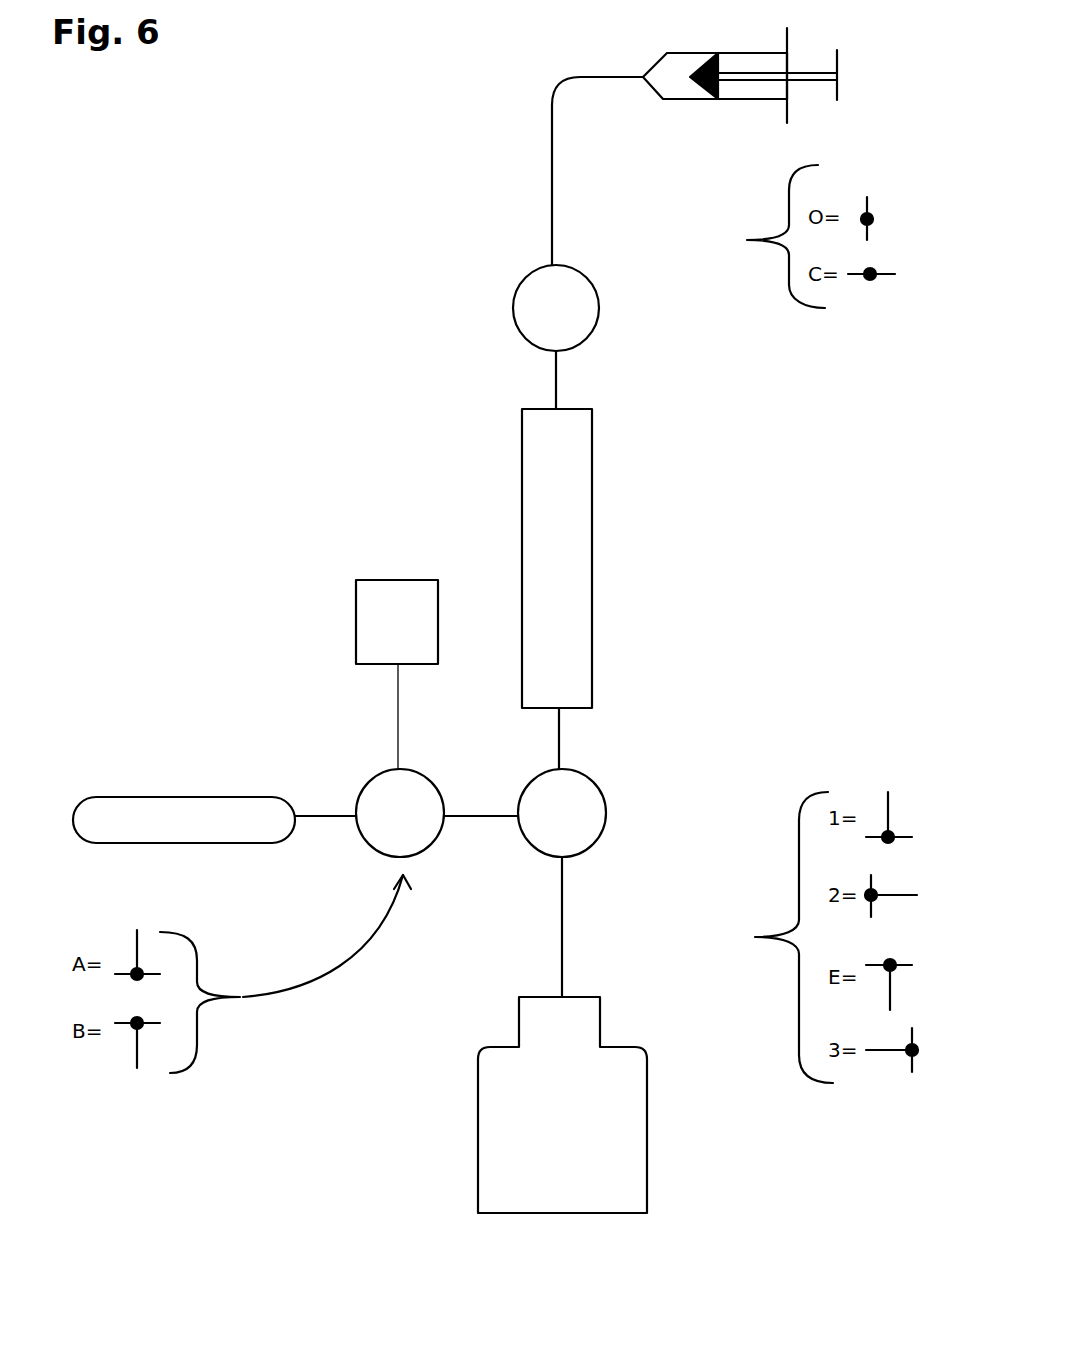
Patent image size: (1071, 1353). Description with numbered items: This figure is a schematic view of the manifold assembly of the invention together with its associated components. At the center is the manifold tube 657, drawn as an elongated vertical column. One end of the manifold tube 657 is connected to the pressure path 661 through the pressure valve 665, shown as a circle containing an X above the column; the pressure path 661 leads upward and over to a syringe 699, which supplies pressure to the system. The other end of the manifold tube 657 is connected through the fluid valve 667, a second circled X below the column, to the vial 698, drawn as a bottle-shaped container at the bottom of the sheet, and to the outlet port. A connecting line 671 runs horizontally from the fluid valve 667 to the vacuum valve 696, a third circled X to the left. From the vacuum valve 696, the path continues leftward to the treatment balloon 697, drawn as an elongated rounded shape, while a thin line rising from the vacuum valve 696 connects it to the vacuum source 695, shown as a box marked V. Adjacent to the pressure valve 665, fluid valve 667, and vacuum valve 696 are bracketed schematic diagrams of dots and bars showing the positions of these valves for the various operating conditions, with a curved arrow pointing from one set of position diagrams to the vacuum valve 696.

The syringe 699 is at (675, 72).
The pressure path 661 is at (552, 163).
The pressure valve 665 is at (512, 307).
The manifold tube 657 is at (592, 483).
The fluid valve 667 is at (597, 832).
The conduit line 671 is at (483, 812).
The vacuum source 695 is at (355, 597).
The vacuum valve 696 is at (371, 778).
The treatment balloon 697 is at (110, 797).
The vial 698 is at (478, 1080).